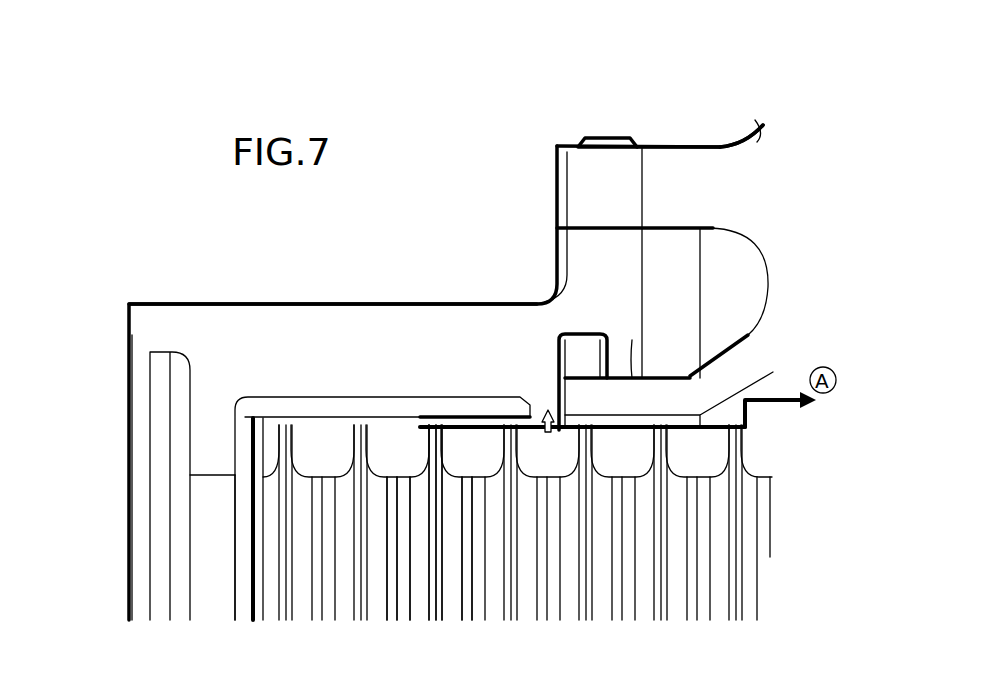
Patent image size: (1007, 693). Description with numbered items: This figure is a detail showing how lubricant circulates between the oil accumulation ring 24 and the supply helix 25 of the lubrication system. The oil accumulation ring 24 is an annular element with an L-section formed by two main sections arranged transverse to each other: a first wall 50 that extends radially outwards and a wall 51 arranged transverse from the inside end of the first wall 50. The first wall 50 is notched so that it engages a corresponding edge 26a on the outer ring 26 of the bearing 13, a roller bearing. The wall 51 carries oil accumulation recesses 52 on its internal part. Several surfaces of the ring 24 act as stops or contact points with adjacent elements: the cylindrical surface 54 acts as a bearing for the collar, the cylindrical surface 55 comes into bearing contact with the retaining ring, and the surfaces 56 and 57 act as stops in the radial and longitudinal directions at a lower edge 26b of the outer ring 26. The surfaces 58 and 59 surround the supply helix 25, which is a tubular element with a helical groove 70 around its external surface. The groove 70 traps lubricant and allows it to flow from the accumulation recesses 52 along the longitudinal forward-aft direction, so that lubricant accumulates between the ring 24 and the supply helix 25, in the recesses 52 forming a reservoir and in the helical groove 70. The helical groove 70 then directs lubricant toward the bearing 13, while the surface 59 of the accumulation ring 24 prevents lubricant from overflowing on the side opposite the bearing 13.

The bearing 13 is at (722, 144).
The oil accumulation ring 24 is at (165, 302).
The supply helix 25 is at (290, 620).
The outer ring 26 is at (760, 135).
The edge 26a is at (672, 173).
The lower edge 26b is at (620, 397).
The first wall 50 is at (592, 178).
The wall 51 is at (197, 330).
The oil accumulation recesses 52 is at (385, 405).
The cylindrical surface 54 is at (462, 302).
The cylindrical surface 55 is at (604, 140).
The cylindrical surface 56 is at (623, 376).
The annular surface 57 is at (556, 365).
The cylindrical surface 58 is at (548, 434).
The annular surface 59 is at (243, 453).
The helical groove 70 is at (480, 628).